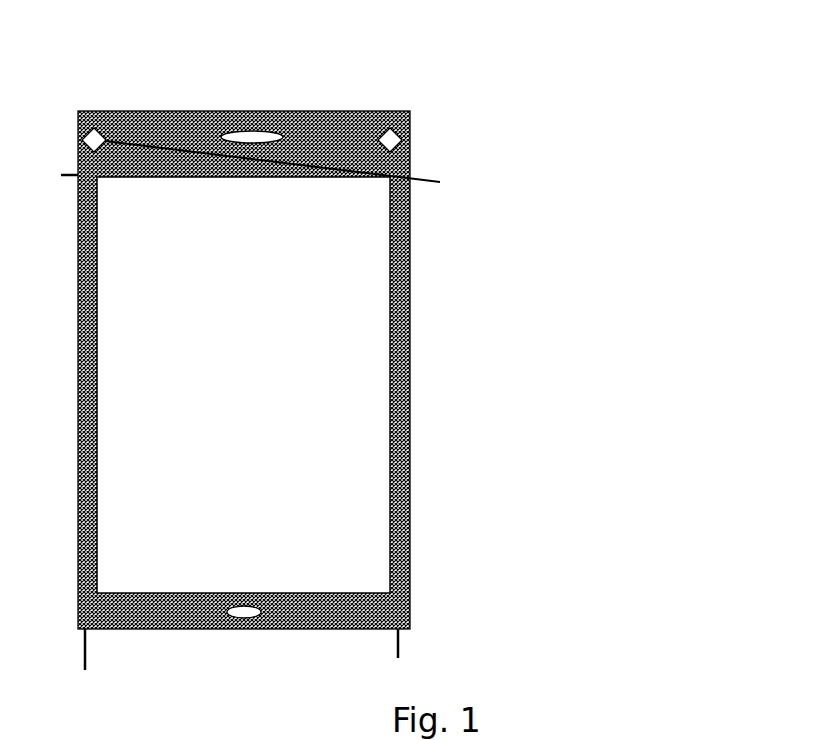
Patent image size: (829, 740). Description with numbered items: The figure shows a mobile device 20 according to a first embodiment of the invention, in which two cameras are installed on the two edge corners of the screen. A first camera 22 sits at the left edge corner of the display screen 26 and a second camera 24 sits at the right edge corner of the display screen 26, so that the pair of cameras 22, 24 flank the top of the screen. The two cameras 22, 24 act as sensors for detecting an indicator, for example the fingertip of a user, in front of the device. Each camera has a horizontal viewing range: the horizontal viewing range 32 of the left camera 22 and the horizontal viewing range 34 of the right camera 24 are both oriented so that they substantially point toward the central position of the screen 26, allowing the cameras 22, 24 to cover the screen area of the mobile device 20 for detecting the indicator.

The mobile device 20 is at (483, 478).
The camera 22 is at (97, 128).
The camera 24 is at (397, 130).
The display screen 26 is at (370, 273).
The horizontal viewing range 32 is at (163, 143).
The horizontal viewing range 34 is at (328, 155).